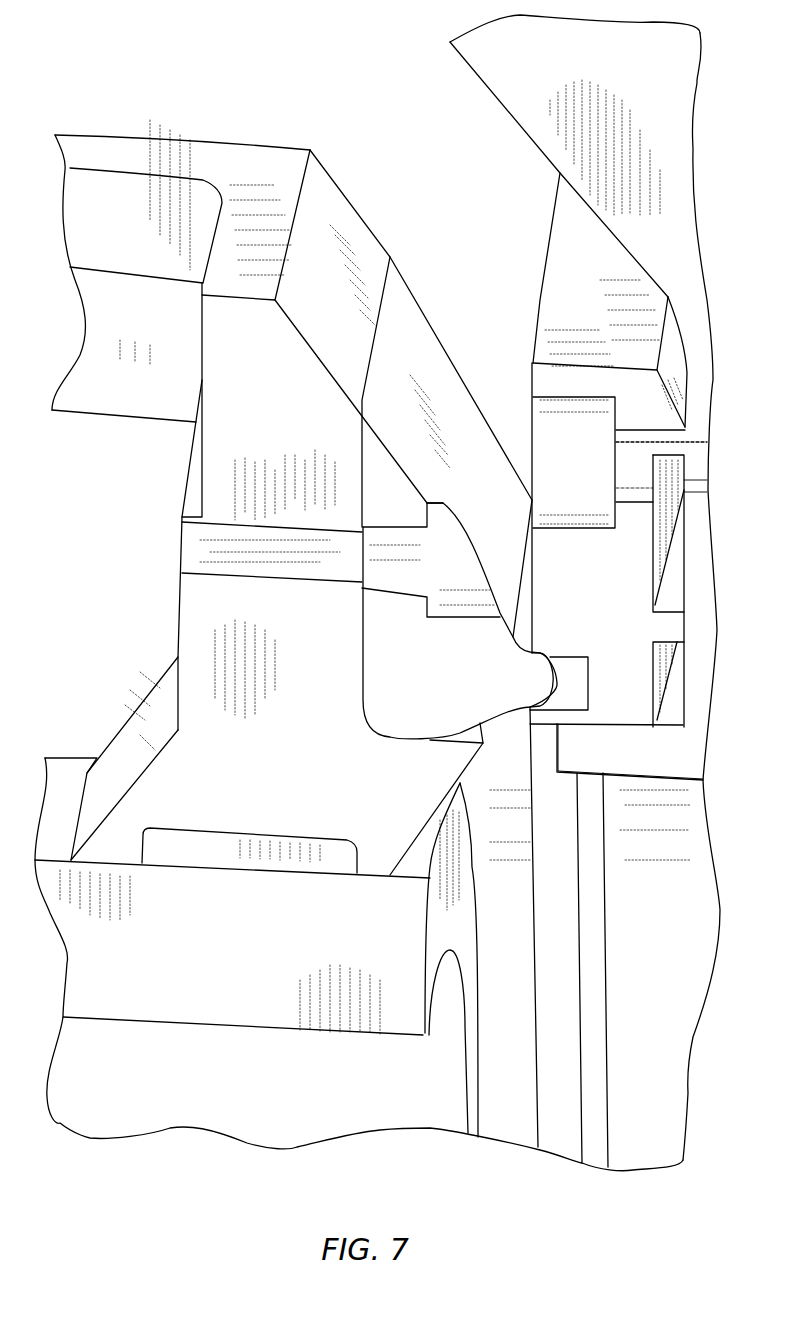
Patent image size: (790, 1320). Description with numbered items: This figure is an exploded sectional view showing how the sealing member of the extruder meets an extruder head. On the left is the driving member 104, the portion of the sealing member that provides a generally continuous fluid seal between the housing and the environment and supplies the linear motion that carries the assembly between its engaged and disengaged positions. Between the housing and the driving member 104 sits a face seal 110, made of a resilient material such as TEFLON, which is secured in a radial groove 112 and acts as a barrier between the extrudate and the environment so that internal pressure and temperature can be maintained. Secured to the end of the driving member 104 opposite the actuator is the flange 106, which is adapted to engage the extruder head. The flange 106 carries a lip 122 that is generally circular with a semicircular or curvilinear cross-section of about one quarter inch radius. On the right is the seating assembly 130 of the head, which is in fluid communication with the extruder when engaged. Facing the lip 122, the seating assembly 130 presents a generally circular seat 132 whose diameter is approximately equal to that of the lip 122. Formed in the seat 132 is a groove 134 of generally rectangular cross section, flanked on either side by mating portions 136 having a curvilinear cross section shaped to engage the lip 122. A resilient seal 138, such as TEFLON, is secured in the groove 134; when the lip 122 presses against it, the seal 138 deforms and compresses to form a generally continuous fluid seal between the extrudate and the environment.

The driving member 104 is at (262, 433).
The flange 106 is at (402, 672).
The face seal 110 is at (187, 862).
The radial groove 112 is at (302, 828).
The lip 122 is at (540, 693).
The seating assembly 130 is at (543, 558).
The seat 132 is at (577, 727).
The groove 134 is at (589, 653).
The mating portions 136 is at (541, 648).
The seal 138 is at (569, 680).